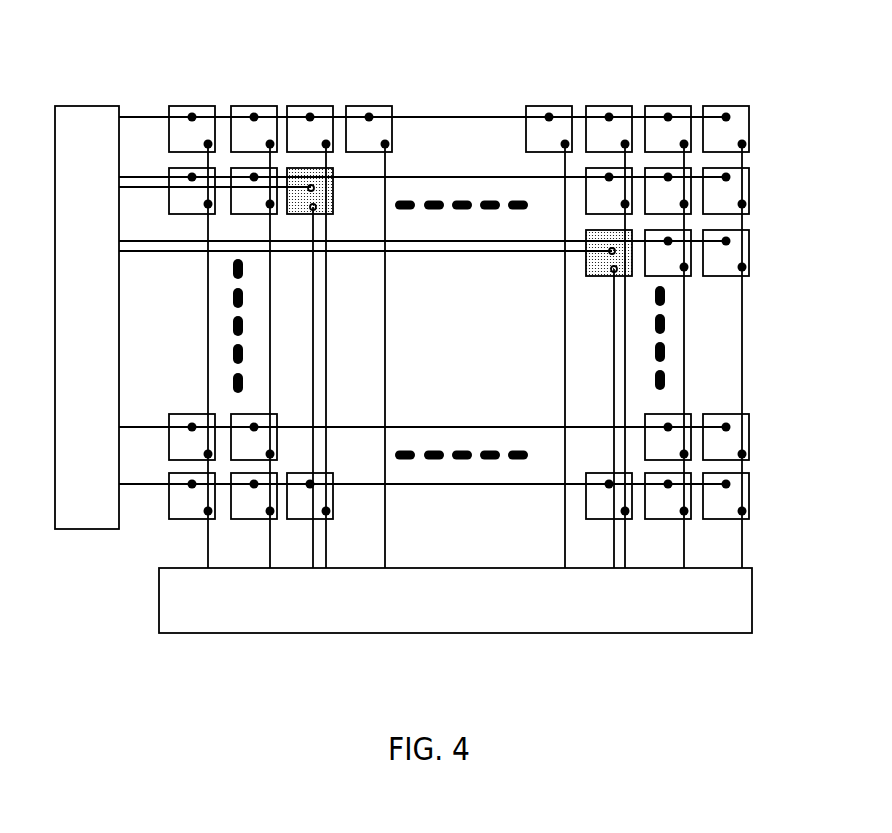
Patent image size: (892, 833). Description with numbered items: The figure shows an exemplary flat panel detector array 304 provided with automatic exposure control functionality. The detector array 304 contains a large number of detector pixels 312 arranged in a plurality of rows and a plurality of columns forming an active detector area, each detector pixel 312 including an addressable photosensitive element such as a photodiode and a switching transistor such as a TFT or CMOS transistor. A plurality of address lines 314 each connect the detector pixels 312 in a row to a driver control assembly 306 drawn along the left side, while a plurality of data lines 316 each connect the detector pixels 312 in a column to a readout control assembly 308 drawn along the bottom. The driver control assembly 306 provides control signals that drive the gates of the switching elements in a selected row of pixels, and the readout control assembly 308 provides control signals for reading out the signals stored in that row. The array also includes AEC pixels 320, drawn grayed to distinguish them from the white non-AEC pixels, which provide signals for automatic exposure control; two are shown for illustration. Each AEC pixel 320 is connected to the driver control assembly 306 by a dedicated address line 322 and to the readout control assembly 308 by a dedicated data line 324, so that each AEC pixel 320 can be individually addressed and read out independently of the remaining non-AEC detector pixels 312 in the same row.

The flat panel detector array 304 is at (624, 84).
The driver control assembly 306 is at (85, 106).
The readout control assembly 308 is at (668, 633).
The detector pixel 312 is at (750, 125).
The address line 314 is at (445, 116).
The data line 316 is at (208, 348).
The AEC pixel 320 is at (333, 192).
The dedicated address line 322 is at (155, 188).
The dedicated data line 324 is at (314, 292).